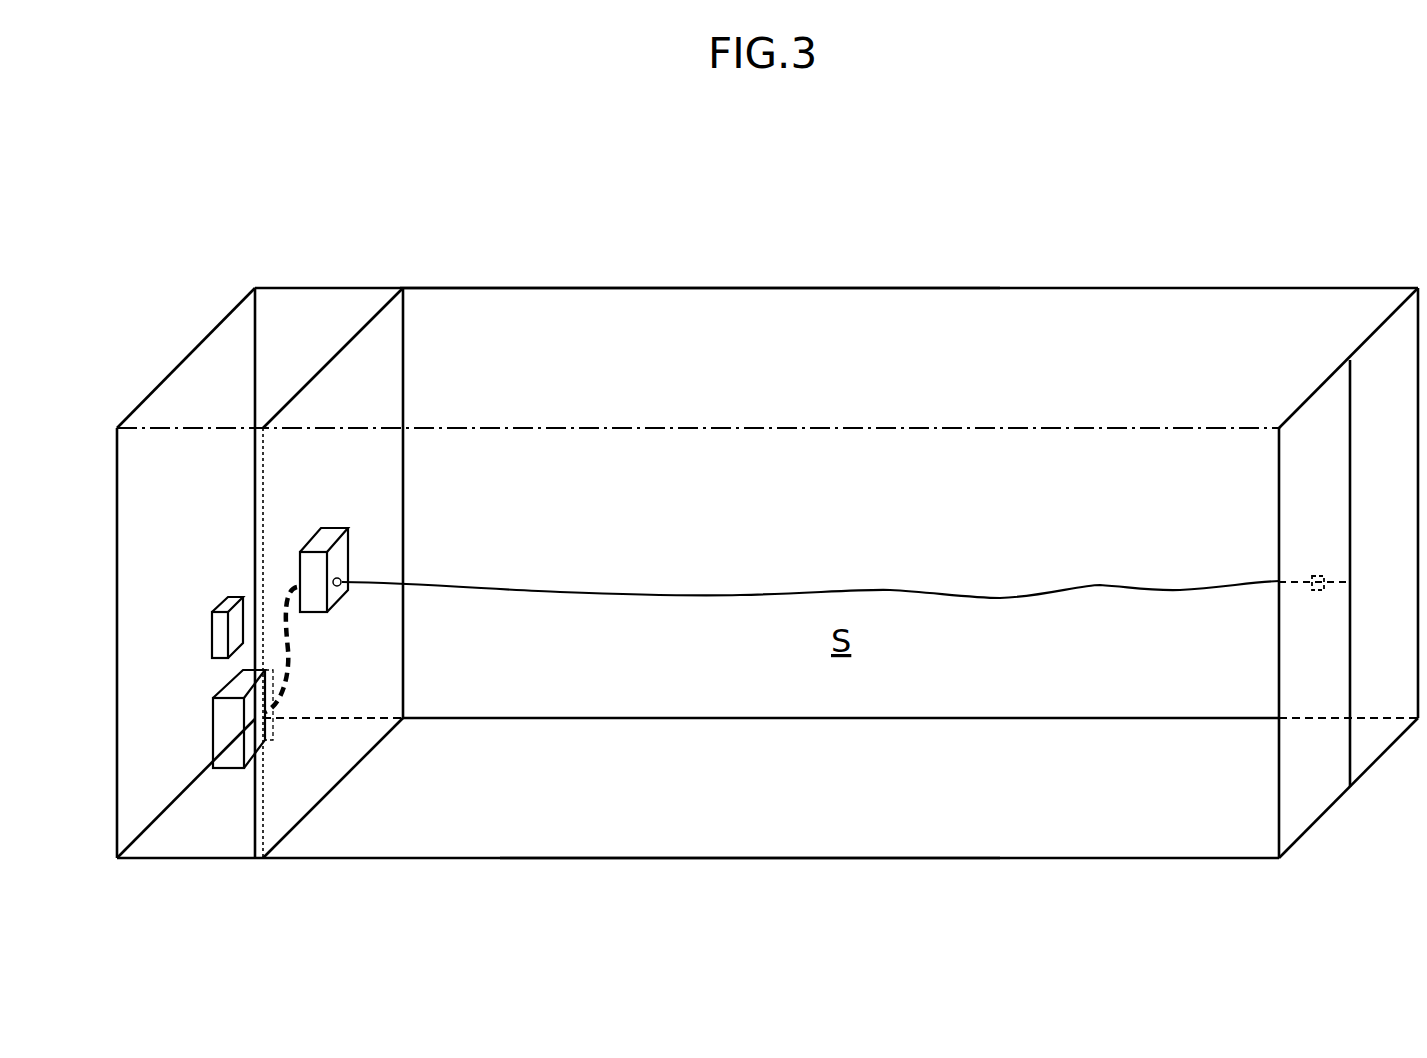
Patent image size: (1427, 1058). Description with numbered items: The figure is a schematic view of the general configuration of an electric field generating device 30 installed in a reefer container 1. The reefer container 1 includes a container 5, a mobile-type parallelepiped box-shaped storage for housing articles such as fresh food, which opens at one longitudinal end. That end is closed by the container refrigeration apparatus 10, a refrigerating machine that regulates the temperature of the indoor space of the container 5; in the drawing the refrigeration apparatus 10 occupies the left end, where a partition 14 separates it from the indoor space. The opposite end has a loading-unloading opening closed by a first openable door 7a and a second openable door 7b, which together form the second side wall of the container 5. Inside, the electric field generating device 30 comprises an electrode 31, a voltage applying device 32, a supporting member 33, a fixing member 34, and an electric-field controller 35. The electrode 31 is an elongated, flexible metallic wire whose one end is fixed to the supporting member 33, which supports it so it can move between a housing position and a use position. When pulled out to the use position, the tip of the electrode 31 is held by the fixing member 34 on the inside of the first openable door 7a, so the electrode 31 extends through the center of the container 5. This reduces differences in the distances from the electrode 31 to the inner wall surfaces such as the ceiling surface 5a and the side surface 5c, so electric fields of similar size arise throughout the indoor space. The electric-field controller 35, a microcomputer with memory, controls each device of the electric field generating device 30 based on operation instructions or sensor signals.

The reefer container 1 is at (897, 178).
The container 5 is at (932, 288).
The ceiling surface 5a is at (1093, 333).
The side surface 5c is at (829, 820).
The first openable door 7a is at (1308, 803).
The second openable door 7b is at (1379, 735).
The container refrigeration apparatus 10 is at (332, 268).
The partition 14 is at (375, 377).
The electric field generating device 30 is at (810, 533).
The electrode 31 is at (983, 595).
The voltage applying device 32 is at (223, 728).
The supporting member 33 is at (342, 555).
The fixing member 34 is at (1315, 575).
The electric-field controller 35 is at (217, 630).